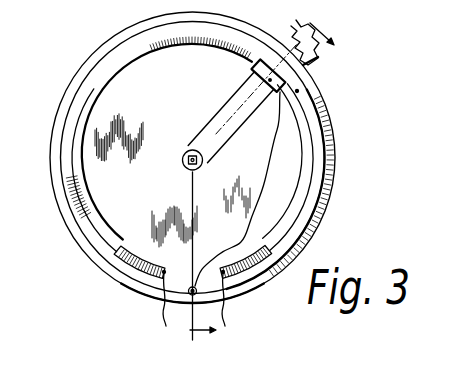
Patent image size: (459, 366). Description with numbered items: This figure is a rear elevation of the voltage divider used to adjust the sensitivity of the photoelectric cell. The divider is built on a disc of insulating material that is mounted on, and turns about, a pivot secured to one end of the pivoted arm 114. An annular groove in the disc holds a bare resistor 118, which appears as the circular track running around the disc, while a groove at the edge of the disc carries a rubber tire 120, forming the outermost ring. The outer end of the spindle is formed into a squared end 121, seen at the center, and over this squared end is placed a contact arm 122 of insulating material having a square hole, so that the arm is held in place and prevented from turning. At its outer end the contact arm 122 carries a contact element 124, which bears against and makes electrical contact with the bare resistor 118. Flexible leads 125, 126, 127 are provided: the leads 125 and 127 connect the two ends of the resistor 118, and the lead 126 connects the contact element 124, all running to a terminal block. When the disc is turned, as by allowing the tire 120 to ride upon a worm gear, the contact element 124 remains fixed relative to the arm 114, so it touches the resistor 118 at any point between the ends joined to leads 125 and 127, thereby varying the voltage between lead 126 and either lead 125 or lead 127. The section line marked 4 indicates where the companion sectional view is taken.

The pivoted arm 114 is at (292, 26).
The bare resistor 118 is at (302, 124).
The tire 120 is at (63, 96).
The squared end 121 is at (186, 162).
The contact arm 122 is at (210, 127).
The contact element 124 is at (265, 63).
The flexible lead 125 is at (167, 316).
The flexible lead 126 is at (197, 296).
The flexible lead 127 is at (225, 312).
The section line 4- 4 is at (266, 189).